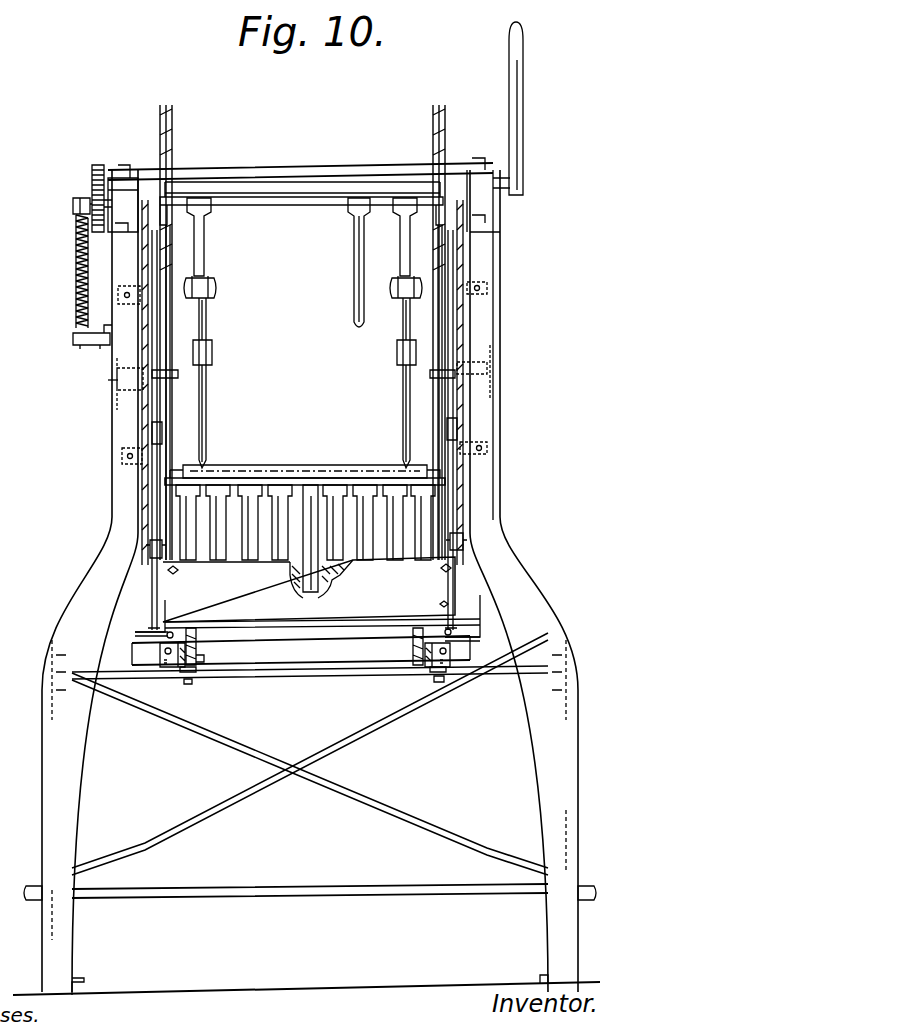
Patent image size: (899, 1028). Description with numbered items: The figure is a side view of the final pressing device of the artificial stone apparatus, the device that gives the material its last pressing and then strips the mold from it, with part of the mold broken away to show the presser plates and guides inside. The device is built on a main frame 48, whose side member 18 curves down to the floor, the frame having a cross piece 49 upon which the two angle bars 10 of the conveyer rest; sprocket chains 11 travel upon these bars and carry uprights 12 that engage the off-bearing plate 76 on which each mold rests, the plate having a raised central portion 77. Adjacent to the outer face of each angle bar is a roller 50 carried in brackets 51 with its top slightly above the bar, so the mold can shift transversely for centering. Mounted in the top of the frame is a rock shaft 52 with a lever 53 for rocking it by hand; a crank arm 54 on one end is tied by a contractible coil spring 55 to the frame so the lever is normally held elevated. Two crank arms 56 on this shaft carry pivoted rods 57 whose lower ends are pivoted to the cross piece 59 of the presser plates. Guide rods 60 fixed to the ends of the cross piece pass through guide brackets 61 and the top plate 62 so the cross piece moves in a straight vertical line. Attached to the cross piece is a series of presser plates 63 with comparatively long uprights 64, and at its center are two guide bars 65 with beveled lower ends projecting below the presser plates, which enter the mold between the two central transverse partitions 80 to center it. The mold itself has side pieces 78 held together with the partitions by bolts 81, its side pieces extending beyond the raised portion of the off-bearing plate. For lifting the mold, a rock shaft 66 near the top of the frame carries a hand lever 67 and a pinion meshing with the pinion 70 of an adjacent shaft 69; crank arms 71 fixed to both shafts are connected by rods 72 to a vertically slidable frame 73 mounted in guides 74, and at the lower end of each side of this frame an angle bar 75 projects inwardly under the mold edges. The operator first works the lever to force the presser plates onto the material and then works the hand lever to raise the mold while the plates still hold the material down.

The angle bars 10 is at (186, 670).
The sprocket chain 11 is at (196, 660).
The uprights 12 is at (212, 664).
The frame side member 18 is at (84, 580).
The main frame 48 is at (546, 596).
The cross piece 49 is at (335, 678).
The roller 50 is at (170, 640).
The brackets 51 is at (158, 656).
The rock shaft 52 is at (300, 204).
The lever 53 is at (354, 282).
The crank arm 54 is at (72, 206).
The contractible coil spring 55 is at (76, 276).
The crank arms 56 is at (204, 246).
The rods 57 is at (206, 392).
The cross piece 59 is at (296, 468).
The guide rods 60 is at (172, 420).
The guide brackets 61 is at (174, 378).
The top plate 62 is at (388, 168).
The presser plates 63 is at (340, 576).
The uprights 64 is at (256, 562).
The guide bars 65 is at (302, 496).
The rock shaft 66 is at (498, 178).
The hand lever 67 is at (518, 124).
The shaft 69 is at (272, 187).
The pinion 70 is at (98, 165).
The crank arms 71 is at (165, 186).
The rods 72 is at (150, 262).
The vertically slidable frame 73 is at (150, 592).
The guides 74 is at (126, 296).
The angle bar 75 is at (140, 630).
The off-bearing plate 76 is at (305, 640).
The raised central portion 77 is at (418, 624).
The side pieces 78 is at (309, 589).
The transverse partitions 80 is at (305, 592).
The bolts 81 is at (441, 602).